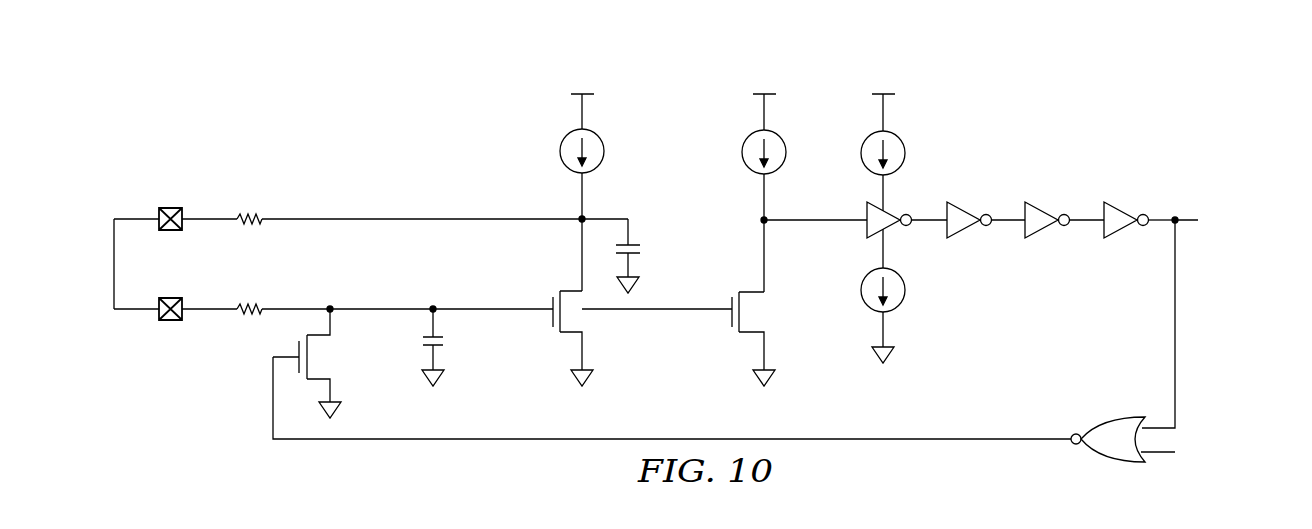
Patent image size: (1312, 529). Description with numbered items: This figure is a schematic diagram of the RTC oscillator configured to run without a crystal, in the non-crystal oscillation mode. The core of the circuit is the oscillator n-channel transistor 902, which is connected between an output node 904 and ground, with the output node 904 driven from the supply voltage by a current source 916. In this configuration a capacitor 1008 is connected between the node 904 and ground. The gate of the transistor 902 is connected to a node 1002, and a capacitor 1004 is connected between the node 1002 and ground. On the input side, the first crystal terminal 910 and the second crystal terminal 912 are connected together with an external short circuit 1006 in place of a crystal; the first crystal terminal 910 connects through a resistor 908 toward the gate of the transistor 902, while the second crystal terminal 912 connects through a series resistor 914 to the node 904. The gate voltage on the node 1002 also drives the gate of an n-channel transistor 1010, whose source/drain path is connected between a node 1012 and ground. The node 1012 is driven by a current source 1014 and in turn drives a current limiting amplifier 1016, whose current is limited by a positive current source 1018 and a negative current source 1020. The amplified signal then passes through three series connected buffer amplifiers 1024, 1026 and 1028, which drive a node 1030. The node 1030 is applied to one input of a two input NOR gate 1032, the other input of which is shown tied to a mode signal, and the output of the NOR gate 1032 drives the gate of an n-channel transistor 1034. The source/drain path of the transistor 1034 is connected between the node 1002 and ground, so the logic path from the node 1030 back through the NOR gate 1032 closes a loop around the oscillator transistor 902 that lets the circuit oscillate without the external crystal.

The external short circuit 1006 is at (112, 264).
The second crystal terminal 912 is at (170, 207).
The first crystal terminal 910 is at (170, 321).
The series resistor 914 is at (250, 212).
The resistor 908 is at (243, 302).
The n-channel transistor 1034 is at (299, 347).
The node 1002 is at (431, 305).
The capacitor 1004 is at (446, 341).
The oscillator n-channel transistor 902 is at (553, 303).
The output node 904 is at (580, 216).
The current source 916 is at (561, 152).
The capacitor 1008 is at (641, 248).
The n-channel transistor 1010 is at (731, 322).
The node 1012 is at (762, 217).
The current source 1014 is at (742, 151).
The positive current source 1018 is at (898, 133).
The negative current source 1020 is at (905, 300).
The current limiting amplifier 1016 is at (866, 232).
The buffer amplifier 1024 is at (988, 190).
The buffer amplifier 1026 is at (1066, 190).
The buffer amplifier 1028 is at (1140, 190).
The node 1030 is at (1180, 230).
The two input NOR gate 1032 is at (1110, 417).